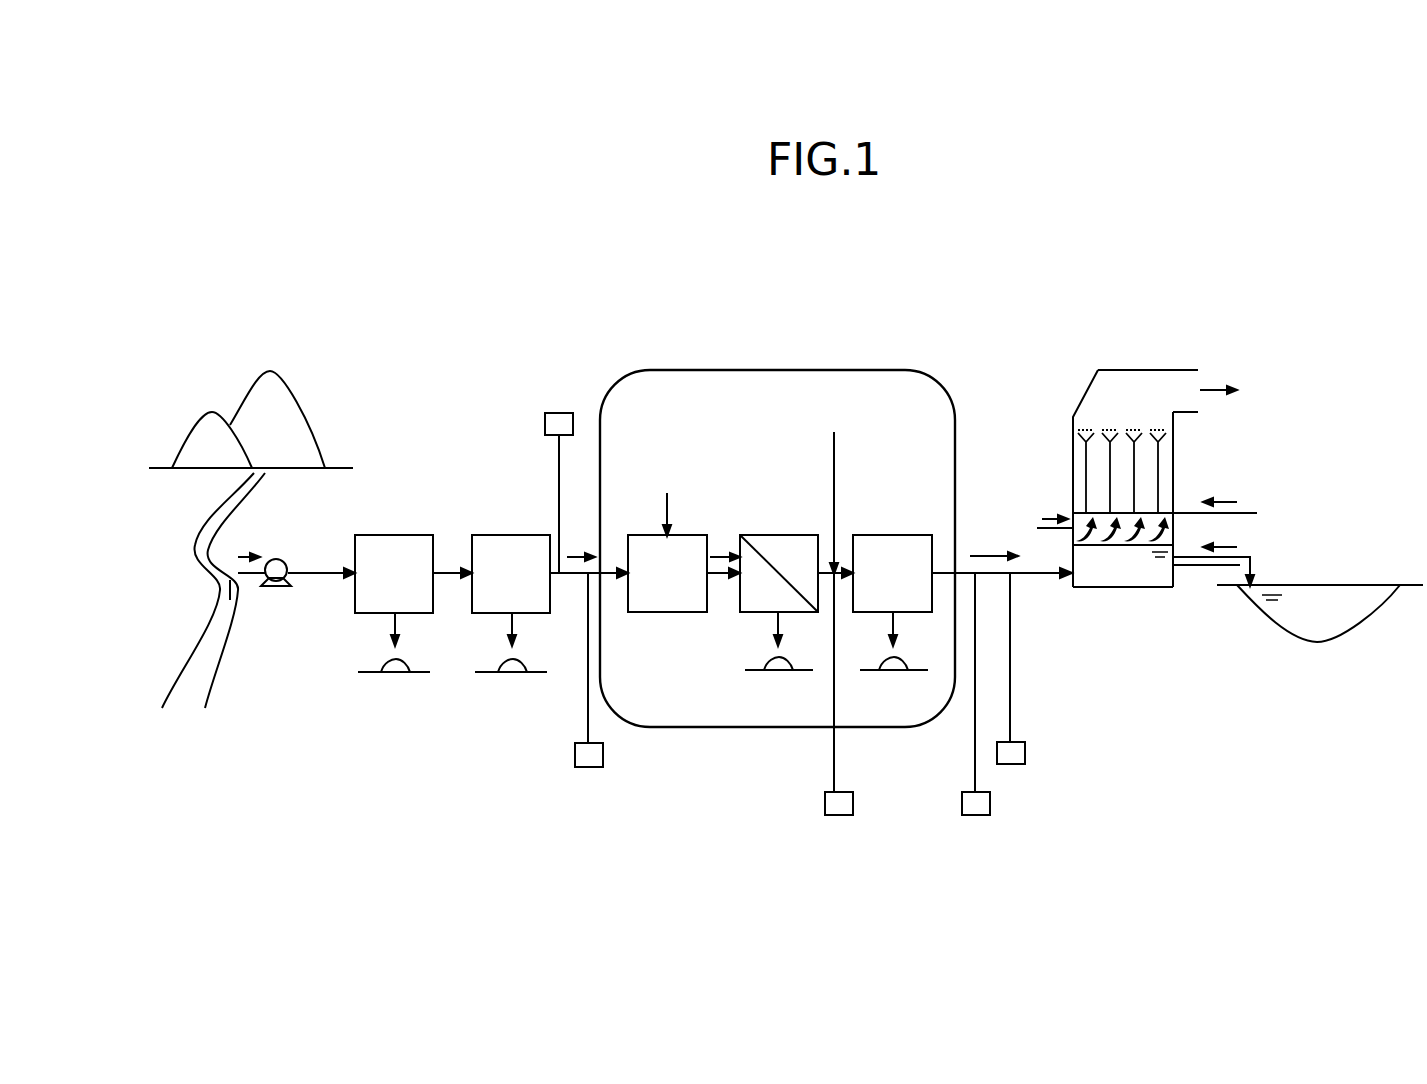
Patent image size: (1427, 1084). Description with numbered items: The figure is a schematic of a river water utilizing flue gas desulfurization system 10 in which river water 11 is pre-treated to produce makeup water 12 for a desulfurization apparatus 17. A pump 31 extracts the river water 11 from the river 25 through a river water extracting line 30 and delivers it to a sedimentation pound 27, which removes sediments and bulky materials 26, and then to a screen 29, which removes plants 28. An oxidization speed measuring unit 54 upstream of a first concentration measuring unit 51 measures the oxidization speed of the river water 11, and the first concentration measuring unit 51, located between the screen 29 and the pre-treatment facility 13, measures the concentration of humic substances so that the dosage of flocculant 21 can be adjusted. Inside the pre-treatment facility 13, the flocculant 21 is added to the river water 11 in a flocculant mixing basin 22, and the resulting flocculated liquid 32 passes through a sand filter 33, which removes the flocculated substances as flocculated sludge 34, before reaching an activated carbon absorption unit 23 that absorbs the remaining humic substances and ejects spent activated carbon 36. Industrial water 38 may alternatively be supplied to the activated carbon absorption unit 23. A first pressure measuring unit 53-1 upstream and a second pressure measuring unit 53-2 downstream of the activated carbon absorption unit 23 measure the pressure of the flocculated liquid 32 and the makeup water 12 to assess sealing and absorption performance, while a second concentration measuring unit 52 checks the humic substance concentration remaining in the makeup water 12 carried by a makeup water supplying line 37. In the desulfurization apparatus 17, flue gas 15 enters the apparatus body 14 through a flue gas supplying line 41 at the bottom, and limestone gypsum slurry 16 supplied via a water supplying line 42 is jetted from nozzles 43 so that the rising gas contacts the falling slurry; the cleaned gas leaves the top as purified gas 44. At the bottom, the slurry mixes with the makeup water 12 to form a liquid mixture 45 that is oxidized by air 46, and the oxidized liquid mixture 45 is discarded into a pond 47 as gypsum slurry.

The river water utilizing flue gas desulfurization system 10 is at (850, 274).
The river water 11 is at (258, 554).
The makeup water 12 is at (994, 552).
The pre-treatment facility 13 is at (708, 370).
The apparatus body 14 is at (1175, 490).
The flue gas 15 is at (1048, 515).
The limestone gypsum slurry 16 is at (1238, 500).
The desulfurization apparatus 17 is at (1148, 370).
The flocculant 21 is at (666, 502).
The flocculant mixing basin 22 is at (670, 613).
The activated carbon absorption unit 23 is at (898, 535).
The river 25 is at (203, 637).
The sediments and bulky materials 26 is at (385, 669).
The sedimentation pound 27 is at (373, 535).
The plants 28 is at (500, 669).
The screen 29 is at (490, 535).
The river water extracting line 30 is at (320, 576).
The pump 31 is at (277, 587).
The flocculated liquid 32 is at (722, 552).
The sand filter 33 is at (775, 535).
The flocculated sludge 34 is at (768, 672).
The spent activated carbon 36 is at (905, 672).
The makeup water supplying line 37 is at (992, 576).
The industrial water 38 is at (826, 491).
The flue gas supplying line 41 is at (1068, 545).
The water supplying line 42 is at (1178, 515).
The nozzles 43 is at (1166, 440).
The purified gas 44 is at (1212, 388).
The liquid mixture 45 is at (1140, 590).
The air 46 is at (1248, 545).
The pond 47 is at (1275, 635).
The first concentration measuring unit 51 is at (590, 768).
The second concentration measuring unit 52 is at (1026, 753).
The first pressure measuring unit 53-1 is at (838, 816).
The second pressure measuring unit 53-2 is at (976, 816).
The oxidization speed measuring unit 54 is at (557, 413).